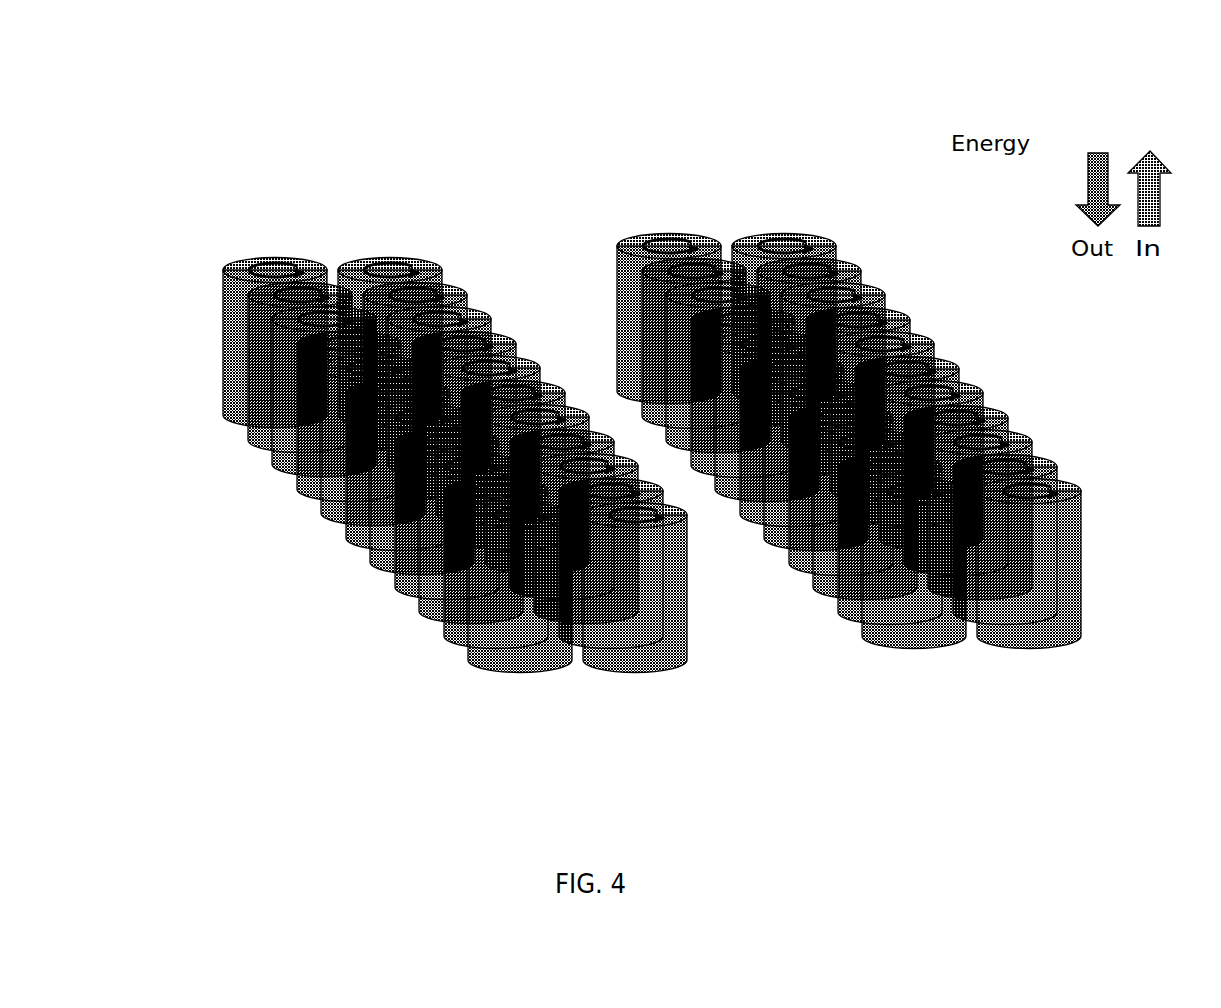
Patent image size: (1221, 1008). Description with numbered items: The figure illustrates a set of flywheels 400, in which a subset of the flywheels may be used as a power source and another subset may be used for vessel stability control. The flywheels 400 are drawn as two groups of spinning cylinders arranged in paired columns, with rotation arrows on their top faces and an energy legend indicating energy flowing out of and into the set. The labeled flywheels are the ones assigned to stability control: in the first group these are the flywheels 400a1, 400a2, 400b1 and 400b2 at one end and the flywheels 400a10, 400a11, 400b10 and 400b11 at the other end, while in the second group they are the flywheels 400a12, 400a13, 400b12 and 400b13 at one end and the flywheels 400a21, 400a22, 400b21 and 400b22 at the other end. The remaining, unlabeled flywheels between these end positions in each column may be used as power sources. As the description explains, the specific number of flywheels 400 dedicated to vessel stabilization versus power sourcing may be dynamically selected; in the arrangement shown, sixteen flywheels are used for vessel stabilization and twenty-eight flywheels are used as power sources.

The set of flywheels 400 is at (558, 97).
The flywheel 400a1 is at (240, 252).
The flywheel 400a2 is at (238, 315).
The flywheel 400b1 is at (377, 250).
The flywheel 400b2 is at (445, 278).
The flywheel 400a10 is at (443, 628).
The flywheel 400a11 is at (517, 667).
The flywheel 400b10 is at (652, 483).
The flywheel 400b11 is at (630, 640).
The flywheel 400a12 is at (646, 228).
The flywheel 400a13 is at (641, 272).
The flywheel 400b12 is at (778, 226).
The flywheel 400b13 is at (842, 253).
The flywheel 400a21 is at (843, 592).
The flywheel 400a22 is at (890, 613).
The flywheel 400b21 is at (1047, 452).
The flywheel 400b22 is at (1030, 613).